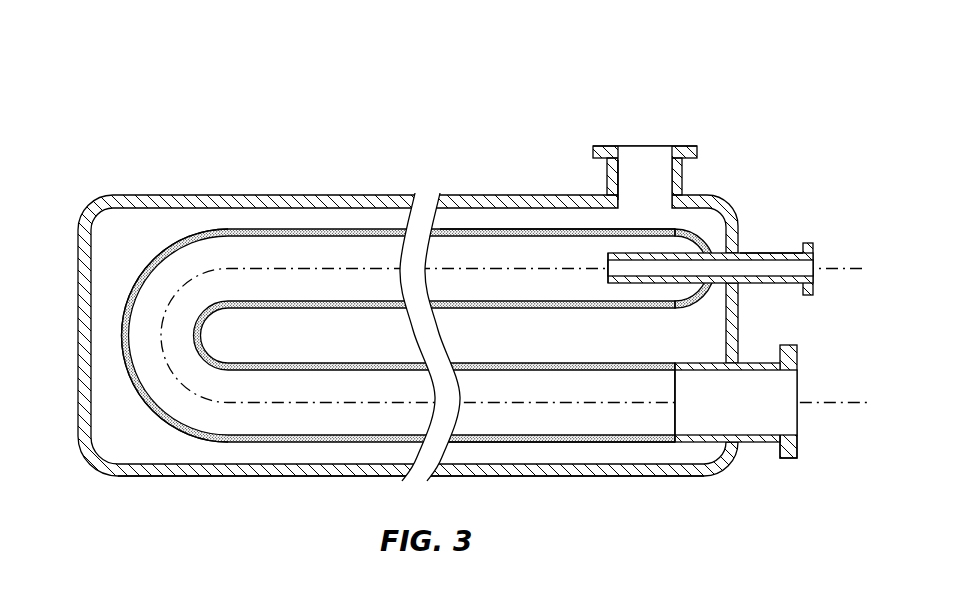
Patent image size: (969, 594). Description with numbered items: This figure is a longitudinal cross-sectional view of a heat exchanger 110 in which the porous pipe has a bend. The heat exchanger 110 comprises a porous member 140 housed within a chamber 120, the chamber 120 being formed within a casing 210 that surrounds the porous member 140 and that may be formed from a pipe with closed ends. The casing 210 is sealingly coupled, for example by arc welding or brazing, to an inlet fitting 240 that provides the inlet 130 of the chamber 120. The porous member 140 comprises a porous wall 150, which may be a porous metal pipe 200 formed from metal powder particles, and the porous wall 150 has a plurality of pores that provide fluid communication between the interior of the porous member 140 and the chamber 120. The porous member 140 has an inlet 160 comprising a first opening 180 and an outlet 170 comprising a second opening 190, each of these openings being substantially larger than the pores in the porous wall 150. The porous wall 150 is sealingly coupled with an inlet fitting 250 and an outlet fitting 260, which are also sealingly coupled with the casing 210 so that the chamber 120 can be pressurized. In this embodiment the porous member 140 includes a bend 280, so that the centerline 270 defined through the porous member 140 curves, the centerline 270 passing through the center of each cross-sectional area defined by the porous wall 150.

The heat exchanger 110 is at (464, 296).
The chamber 120 is at (140, 230).
The inlet 130 is at (642, 163).
The porous member 140 is at (315, 226).
The porous wall 150 is at (594, 443).
The inlet 160 is at (810, 267).
The outlet 170 is at (780, 420).
The first opening 180 is at (608, 267).
The second opening 190 is at (675, 413).
The porous metal pipe 200 is at (452, 224).
The casing 210 is at (312, 477).
The inlet fitting 240 is at (597, 133).
The inlet fitting 250 is at (782, 235).
The outlet fitting 260 is at (772, 467).
The centerline 270 is at (203, 400).
The bend 280 is at (135, 407).